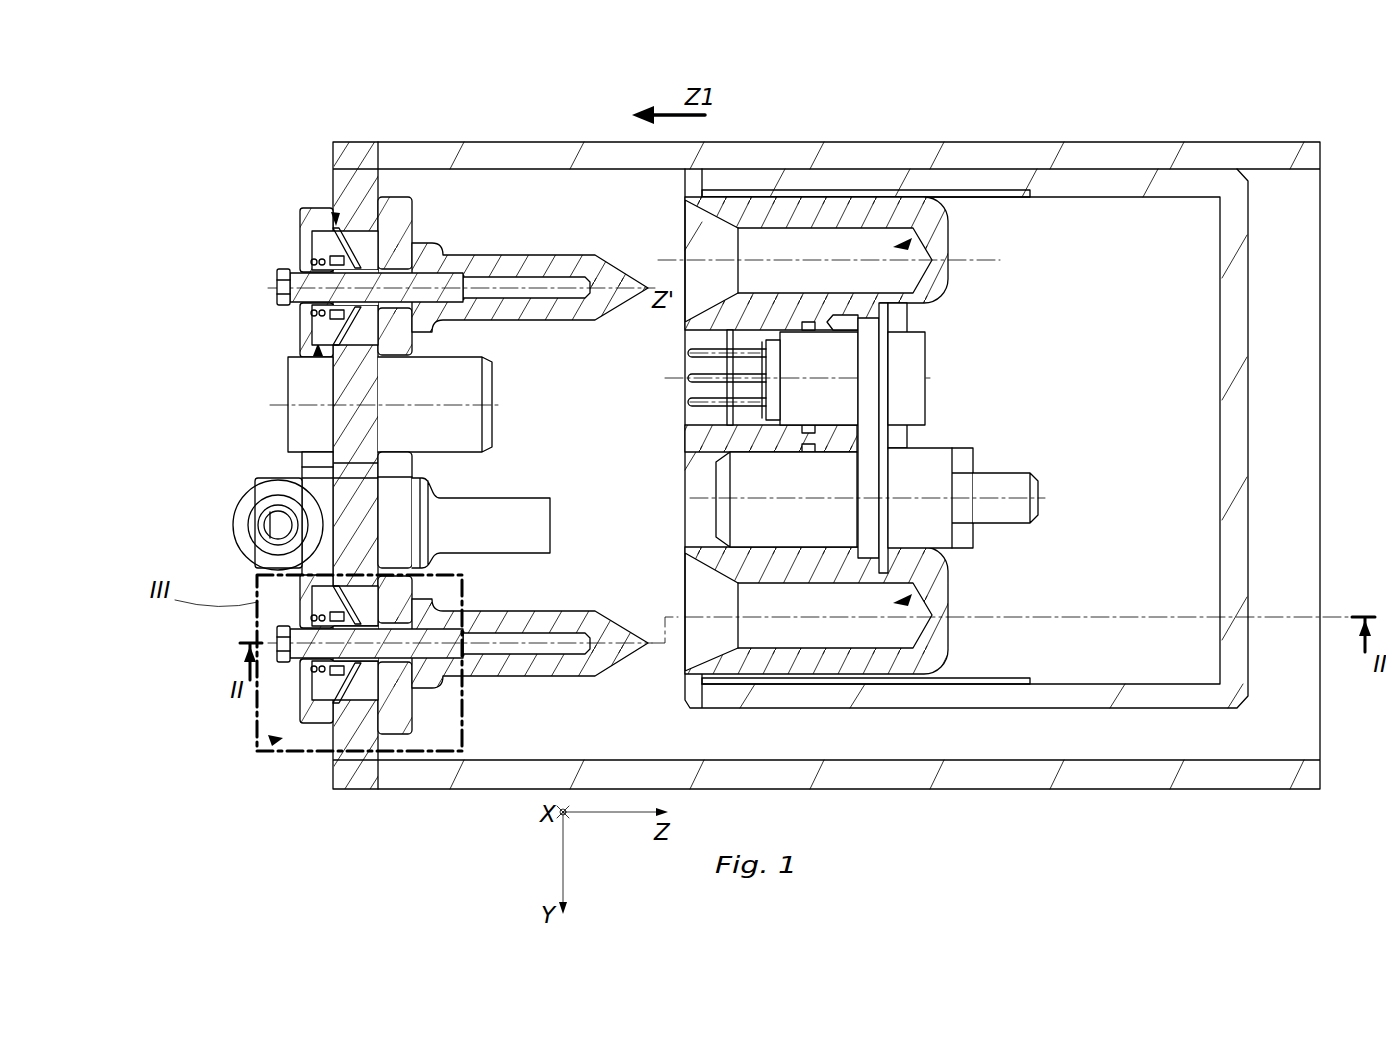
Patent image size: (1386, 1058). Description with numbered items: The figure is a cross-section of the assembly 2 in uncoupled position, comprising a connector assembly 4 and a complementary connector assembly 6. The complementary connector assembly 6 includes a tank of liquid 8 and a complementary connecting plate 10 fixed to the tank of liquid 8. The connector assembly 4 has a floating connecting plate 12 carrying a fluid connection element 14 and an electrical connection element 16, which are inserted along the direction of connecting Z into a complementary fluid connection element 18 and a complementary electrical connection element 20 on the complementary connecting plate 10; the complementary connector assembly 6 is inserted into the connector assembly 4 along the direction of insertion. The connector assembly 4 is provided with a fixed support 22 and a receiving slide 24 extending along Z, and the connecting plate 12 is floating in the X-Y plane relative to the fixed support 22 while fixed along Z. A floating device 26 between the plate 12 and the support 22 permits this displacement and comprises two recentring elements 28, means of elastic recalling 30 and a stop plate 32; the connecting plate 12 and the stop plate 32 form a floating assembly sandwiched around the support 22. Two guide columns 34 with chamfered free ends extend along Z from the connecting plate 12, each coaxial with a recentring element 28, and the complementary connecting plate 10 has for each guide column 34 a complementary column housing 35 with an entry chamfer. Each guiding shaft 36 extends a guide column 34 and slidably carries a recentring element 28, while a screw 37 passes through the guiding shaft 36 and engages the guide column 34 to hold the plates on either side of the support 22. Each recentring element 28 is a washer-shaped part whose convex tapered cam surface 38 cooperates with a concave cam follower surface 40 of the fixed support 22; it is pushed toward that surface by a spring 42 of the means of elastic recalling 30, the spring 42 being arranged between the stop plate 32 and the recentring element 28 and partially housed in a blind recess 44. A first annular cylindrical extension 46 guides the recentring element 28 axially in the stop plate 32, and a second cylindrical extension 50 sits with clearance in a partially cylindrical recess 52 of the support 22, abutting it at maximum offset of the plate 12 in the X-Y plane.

The assembly 2 is at (806, 490).
The connector assembly 4 is at (395, 455).
The complementary connector assembly 6 is at (1001, 510).
The tank of liquid 8 is at (961, 440).
The complementary connecting plate 10 is at (870, 700).
The floating connecting plate 12 is at (408, 742).
The fluid connection element 14 is at (498, 513).
The electrical connection element 16 is at (470, 390).
The complementary fluid connection element 18 is at (755, 488).
The complementary electrical connection element 20 is at (910, 355).
The fixed support 22 is at (355, 180).
The receiving slide 24 is at (790, 150).
The floating device 26 is at (275, 742).
The recentring element 28 is at (312, 270).
The means of elastic recalling 30 is at (318, 350).
The stop plate 32 is at (302, 216).
The guide column 34 is at (530, 252).
The column housing 35 is at (905, 243).
The guiding shaft 36 is at (300, 700).
The screw 37 is at (290, 300).
The cam surface 38 is at (380, 232).
The cam follower surface 40 is at (322, 241).
The spring 42 is at (318, 320).
The blind recess 44 is at (300, 752).
The first annular cylindrical extension 46 is at (335, 212).
The second cylindrical extension 50 is at (425, 600).
The partially cylindrical recess 52 is at (420, 690).